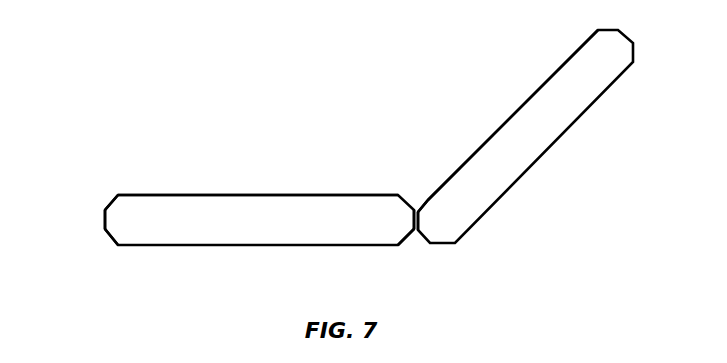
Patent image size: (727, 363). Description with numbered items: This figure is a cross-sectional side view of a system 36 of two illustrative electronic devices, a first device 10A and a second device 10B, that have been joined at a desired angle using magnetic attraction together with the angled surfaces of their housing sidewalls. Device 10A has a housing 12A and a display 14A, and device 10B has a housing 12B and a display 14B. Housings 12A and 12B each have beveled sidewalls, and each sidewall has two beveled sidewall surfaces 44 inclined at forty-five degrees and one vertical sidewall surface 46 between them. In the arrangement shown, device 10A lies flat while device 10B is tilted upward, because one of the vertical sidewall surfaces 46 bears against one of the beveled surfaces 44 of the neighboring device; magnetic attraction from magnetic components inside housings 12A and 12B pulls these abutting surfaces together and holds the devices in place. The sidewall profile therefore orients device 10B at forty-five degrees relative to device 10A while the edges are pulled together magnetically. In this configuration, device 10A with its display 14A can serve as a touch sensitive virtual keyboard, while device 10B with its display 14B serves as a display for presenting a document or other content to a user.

The electronic device system 36 is at (333, 70).
The first electronic device 10A is at (221, 163).
The second electronic device 10B is at (473, 95).
The housing of first device 12A is at (233, 233).
The housing of second device 12B is at (480, 192).
The display of first device 14A is at (290, 193).
The display of second device 14B is at (540, 85).
The beveled sidewall surface 44 is at (112, 202).
The vertical sidewall surface 46 is at (103, 227).